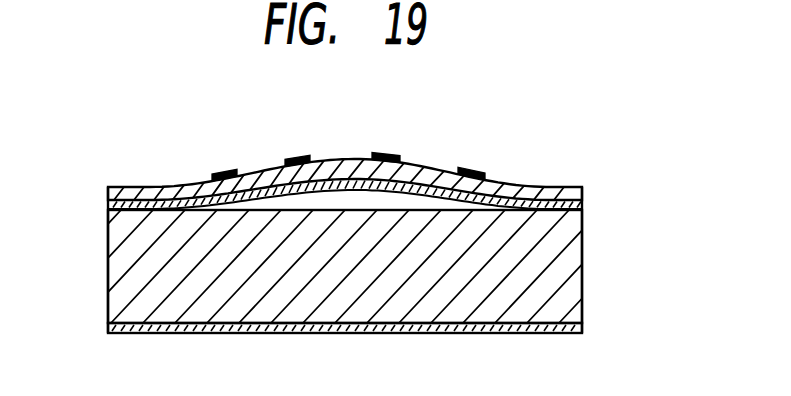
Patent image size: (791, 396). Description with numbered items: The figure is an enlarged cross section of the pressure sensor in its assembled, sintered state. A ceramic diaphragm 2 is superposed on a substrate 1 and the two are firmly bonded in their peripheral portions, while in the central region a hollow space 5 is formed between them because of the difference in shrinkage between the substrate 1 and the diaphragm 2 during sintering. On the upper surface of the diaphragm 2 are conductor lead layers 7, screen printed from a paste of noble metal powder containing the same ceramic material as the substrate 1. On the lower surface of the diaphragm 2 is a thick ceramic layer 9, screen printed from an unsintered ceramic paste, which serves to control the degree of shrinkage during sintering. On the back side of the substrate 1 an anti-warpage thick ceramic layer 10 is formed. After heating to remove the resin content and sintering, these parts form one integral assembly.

The substrate 1 is at (568, 272).
The diaphragm 2 is at (345, 149).
The hollow space 5 is at (352, 189).
The conductor lead layers 7 is at (298, 156).
The thick ceramic layer 9 is at (432, 188).
The anti-warpage thick ceramic layer 10 is at (132, 334).